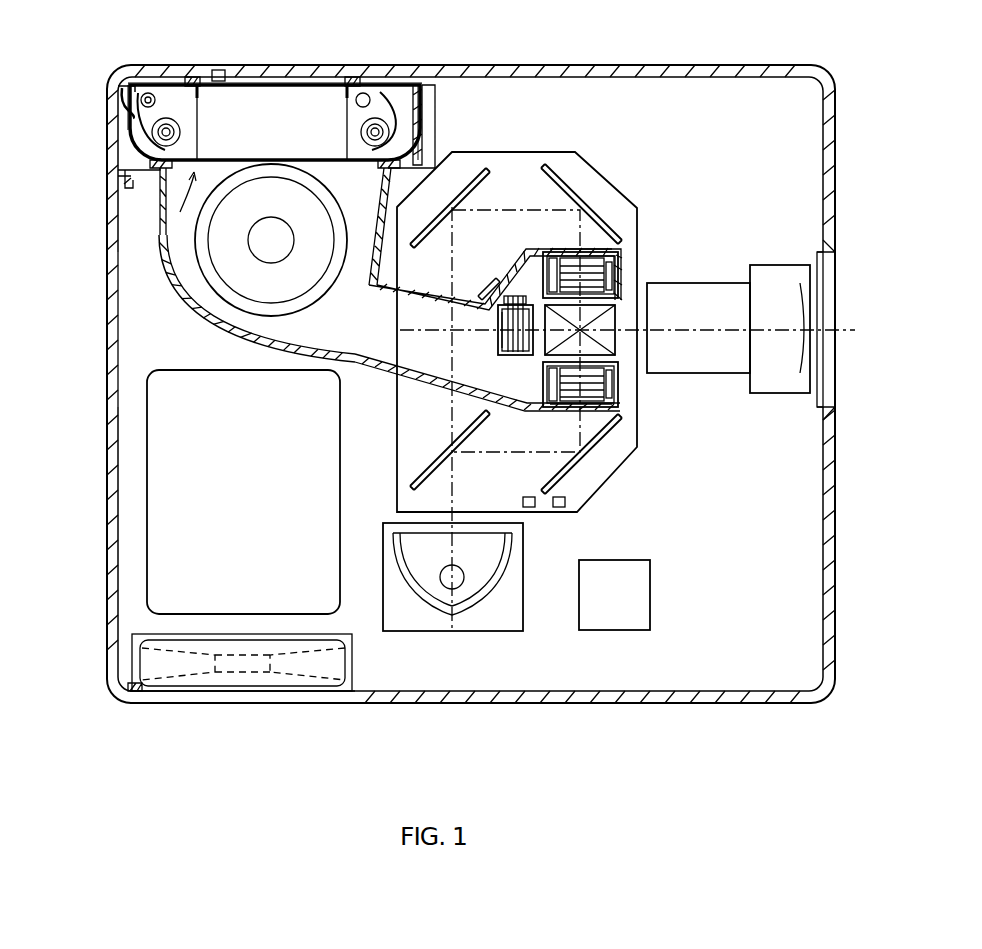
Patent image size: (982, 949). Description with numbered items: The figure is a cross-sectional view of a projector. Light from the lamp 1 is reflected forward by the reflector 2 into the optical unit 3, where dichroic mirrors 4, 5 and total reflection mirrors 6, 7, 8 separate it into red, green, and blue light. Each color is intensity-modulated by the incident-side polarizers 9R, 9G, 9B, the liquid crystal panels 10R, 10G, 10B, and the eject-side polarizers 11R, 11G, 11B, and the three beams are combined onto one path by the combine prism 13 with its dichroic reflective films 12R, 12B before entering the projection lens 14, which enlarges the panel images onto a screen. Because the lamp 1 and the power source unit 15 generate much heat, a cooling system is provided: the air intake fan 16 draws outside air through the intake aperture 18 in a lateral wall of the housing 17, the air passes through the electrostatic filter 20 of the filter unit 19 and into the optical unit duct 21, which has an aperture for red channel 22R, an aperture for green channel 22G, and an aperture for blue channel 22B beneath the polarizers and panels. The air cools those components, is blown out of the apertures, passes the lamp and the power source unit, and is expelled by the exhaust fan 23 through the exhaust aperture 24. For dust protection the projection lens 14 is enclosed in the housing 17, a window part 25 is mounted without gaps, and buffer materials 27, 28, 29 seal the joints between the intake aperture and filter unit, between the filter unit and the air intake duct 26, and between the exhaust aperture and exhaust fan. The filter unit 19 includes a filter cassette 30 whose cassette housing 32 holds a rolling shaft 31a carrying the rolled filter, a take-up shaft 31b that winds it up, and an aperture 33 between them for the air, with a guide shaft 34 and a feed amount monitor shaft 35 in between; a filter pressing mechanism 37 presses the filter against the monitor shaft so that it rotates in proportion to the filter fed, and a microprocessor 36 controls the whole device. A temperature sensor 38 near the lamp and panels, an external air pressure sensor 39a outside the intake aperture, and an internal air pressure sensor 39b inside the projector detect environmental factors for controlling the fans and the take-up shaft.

The lamp 1 is at (446, 590).
The reflector 2 is at (462, 600).
The optical unit 3 is at (580, 504).
The dichroic mirror 4 is at (449, 458).
The dichroic mirror 5 is at (446, 352).
The total reflection mirror 6 is at (562, 474).
The total reflection mirror 7 is at (489, 162).
The total reflection mirror 8 is at (550, 162).
The incident-side polarizer 9R is at (612, 242).
The incident-side polarizer 9G is at (504, 326).
The incident-side polarizer 9B is at (614, 406).
The liquid crystal panel 10R is at (566, 258).
The liquid crystal panel 10G is at (482, 298).
The liquid crystal panel 10B is at (606, 392).
The eject-side polarizer 11R is at (546, 258).
The eject-side polarizer 11G is at (510, 294).
The eject-side polarizer 11B is at (546, 401).
The dichroic reflective film 12R is at (612, 376).
The dichroic reflective film 12B is at (616, 270).
The combine prism 13 is at (616, 306).
The projection lens 14 is at (780, 270).
The power source unit 15 is at (180, 472).
The air intake fan 16 is at (208, 240).
The housing 17 is at (116, 331).
The intake aperture 18 is at (333, 82).
The filter unit 19 is at (160, 202).
The electrostatic filter 20 is at (300, 84).
The optical unit duct 21 is at (364, 360).
The aperture for red channel 22R is at (618, 252).
The aperture for green channel 22G is at (502, 344).
The aperture for blue channel 22B is at (560, 403).
The exhaust fan 23 is at (178, 671).
The exhaust aperture 24 is at (255, 697).
The window part 25 is at (826, 285).
The air intake duct 26 is at (198, 297).
The buffer material 27 is at (193, 78).
The buffer material 28 is at (124, 177).
The buffer material 29 is at (132, 684).
The filter cassette 30 is at (126, 138).
The rolling shaft 31a is at (390, 133).
The take-up shaft 31b is at (155, 136).
The cassette housing 32 is at (423, 104).
The aperture 33 is at (264, 84).
The guide shaft 34 is at (363, 94).
The feed amount monitor shaft 35 is at (149, 94).
The microprocessor 36 is at (644, 596).
The filter pressing mechanism 37 is at (118, 94).
The temperature sensor 38 is at (560, 507).
The external air pressure sensor 39a is at (216, 70).
The internal air pressure sensor 39b is at (528, 507).